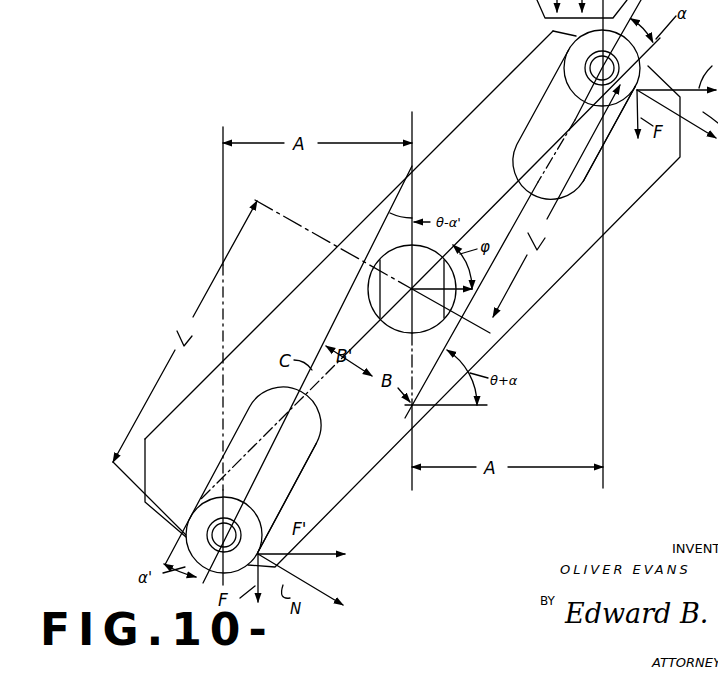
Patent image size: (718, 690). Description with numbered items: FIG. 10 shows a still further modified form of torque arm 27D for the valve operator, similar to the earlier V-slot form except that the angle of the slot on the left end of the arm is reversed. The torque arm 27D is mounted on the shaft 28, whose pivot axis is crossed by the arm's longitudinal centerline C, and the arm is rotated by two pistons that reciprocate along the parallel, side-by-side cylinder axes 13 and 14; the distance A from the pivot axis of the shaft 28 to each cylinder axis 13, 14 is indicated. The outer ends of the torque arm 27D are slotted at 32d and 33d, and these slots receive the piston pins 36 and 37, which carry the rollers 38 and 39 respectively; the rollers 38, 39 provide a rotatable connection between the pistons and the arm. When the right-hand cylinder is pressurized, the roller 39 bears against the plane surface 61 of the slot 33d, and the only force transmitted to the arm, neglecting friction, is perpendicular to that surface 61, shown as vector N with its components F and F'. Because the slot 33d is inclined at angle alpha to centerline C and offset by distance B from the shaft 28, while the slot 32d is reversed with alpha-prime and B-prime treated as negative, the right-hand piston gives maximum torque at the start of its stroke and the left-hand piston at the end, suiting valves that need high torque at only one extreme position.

The cylinder axis 13 is at (223, 211).
The cylinder axis 14 is at (606, 310).
The torque arm 27D is at (294, 296).
The shaft 28 is at (387, 287).
The slot 32d is at (233, 434).
The slot 33d is at (536, 110).
The piston pin 36 is at (238, 518).
The piston pin 37 is at (616, 65).
The roller 38 is at (210, 507).
The roller 39 is at (572, 72).
The plane surface 61 is at (592, 165).